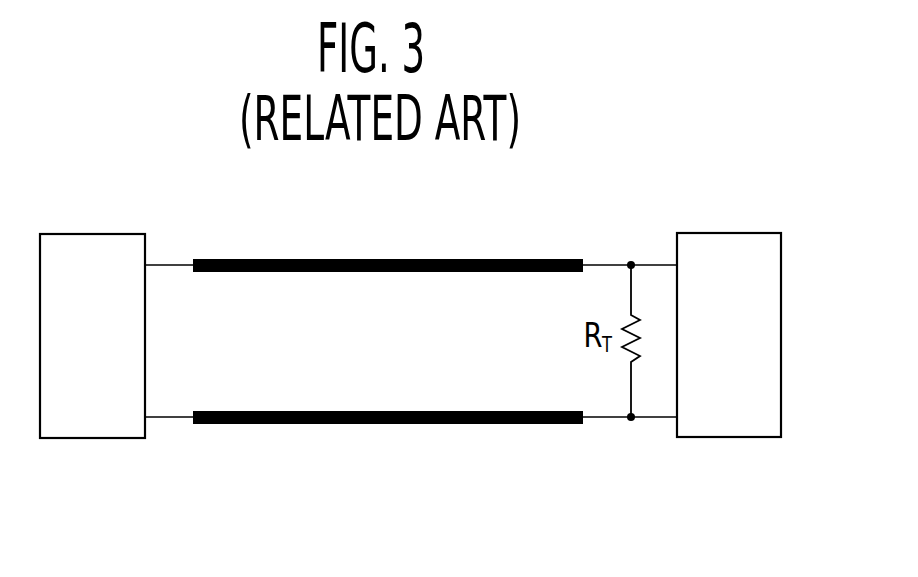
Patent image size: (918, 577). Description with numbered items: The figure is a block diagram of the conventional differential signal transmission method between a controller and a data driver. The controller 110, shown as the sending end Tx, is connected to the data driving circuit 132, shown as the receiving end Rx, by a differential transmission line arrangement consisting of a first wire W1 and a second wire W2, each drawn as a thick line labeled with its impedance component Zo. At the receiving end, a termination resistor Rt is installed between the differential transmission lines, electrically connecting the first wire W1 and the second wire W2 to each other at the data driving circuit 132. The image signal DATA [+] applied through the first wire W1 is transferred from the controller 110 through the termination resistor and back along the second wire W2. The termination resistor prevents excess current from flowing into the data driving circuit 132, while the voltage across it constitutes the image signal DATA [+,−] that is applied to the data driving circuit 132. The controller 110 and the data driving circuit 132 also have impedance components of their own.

The controller 110 is at (90, 234).
The data driving circuit 132 is at (727, 233).
The first wire W1 is at (473, 259).
The second wire W2 is at (473, 411).